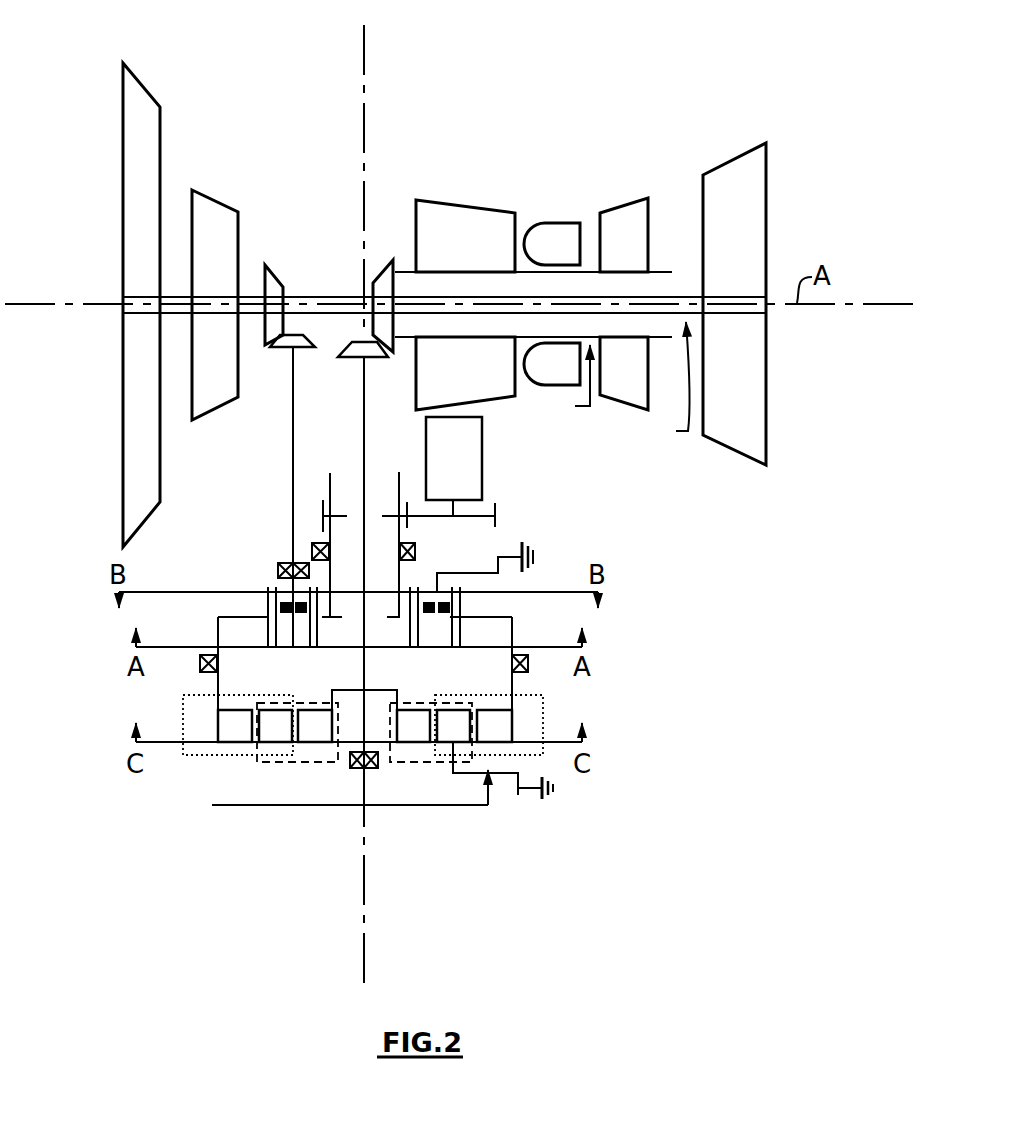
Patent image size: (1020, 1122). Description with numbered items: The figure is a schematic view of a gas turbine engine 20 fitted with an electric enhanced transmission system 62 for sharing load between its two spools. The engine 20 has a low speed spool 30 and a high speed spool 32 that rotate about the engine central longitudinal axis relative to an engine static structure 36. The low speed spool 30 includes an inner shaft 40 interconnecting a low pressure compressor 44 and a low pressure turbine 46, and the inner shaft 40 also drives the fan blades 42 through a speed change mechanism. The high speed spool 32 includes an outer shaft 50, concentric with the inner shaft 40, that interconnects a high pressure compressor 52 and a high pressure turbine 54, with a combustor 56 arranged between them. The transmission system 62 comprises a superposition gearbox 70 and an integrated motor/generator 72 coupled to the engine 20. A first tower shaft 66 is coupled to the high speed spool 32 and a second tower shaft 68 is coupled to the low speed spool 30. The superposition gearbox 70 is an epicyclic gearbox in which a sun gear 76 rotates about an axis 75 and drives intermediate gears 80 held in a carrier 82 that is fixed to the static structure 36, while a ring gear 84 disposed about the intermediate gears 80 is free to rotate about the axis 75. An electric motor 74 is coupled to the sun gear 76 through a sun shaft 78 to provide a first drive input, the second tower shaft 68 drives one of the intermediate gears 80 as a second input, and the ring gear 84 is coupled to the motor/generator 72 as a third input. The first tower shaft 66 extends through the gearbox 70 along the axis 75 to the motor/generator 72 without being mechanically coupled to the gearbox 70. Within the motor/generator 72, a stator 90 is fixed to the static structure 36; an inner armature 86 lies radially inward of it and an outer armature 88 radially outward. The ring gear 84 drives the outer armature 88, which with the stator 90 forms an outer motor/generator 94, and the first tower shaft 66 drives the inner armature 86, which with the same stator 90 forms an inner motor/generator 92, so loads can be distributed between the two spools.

The gas turbine engine 20 is at (460, 158).
The low speed spool 30 is at (310, 297).
The high speed spool 32 is at (405, 268).
The engine static structure 36 is at (540, 548).
The inner shaft 40 is at (667, 385).
The fan blades 42 is at (148, 90).
The low pressure compressor 44 is at (205, 198).
The low pressure turbine 46 is at (735, 162).
The outer shaft 50 is at (567, 384).
The high pressure compressor 52 is at (475, 207).
The high pressure turbine 54 is at (620, 210).
The combustor 56 is at (560, 223).
The electric enhanced transmission system 62 is at (739, 571).
The first tower shaft 66 is at (366, 442).
The second tower shaft 68 is at (293, 473).
The superposition gearbox 70 is at (178, 667).
The integrated motor/generator 72 is at (309, 779).
The electric motor 74 is at (483, 462).
The axis 75 is at (364, 880).
The sun gear 76 is at (340, 604).
The sun shaft 78 is at (400, 575).
The intermediate gears 80 is at (283, 605).
The carrier 82 is at (483, 573).
The ring gear 84 is at (488, 616).
The inner armature 86 is at (328, 742).
The outer armature 88 is at (223, 740).
The stator 90 is at (263, 742).
The inner motor/generator 92 is at (300, 766).
The outer motor/generator 94 is at (230, 762).